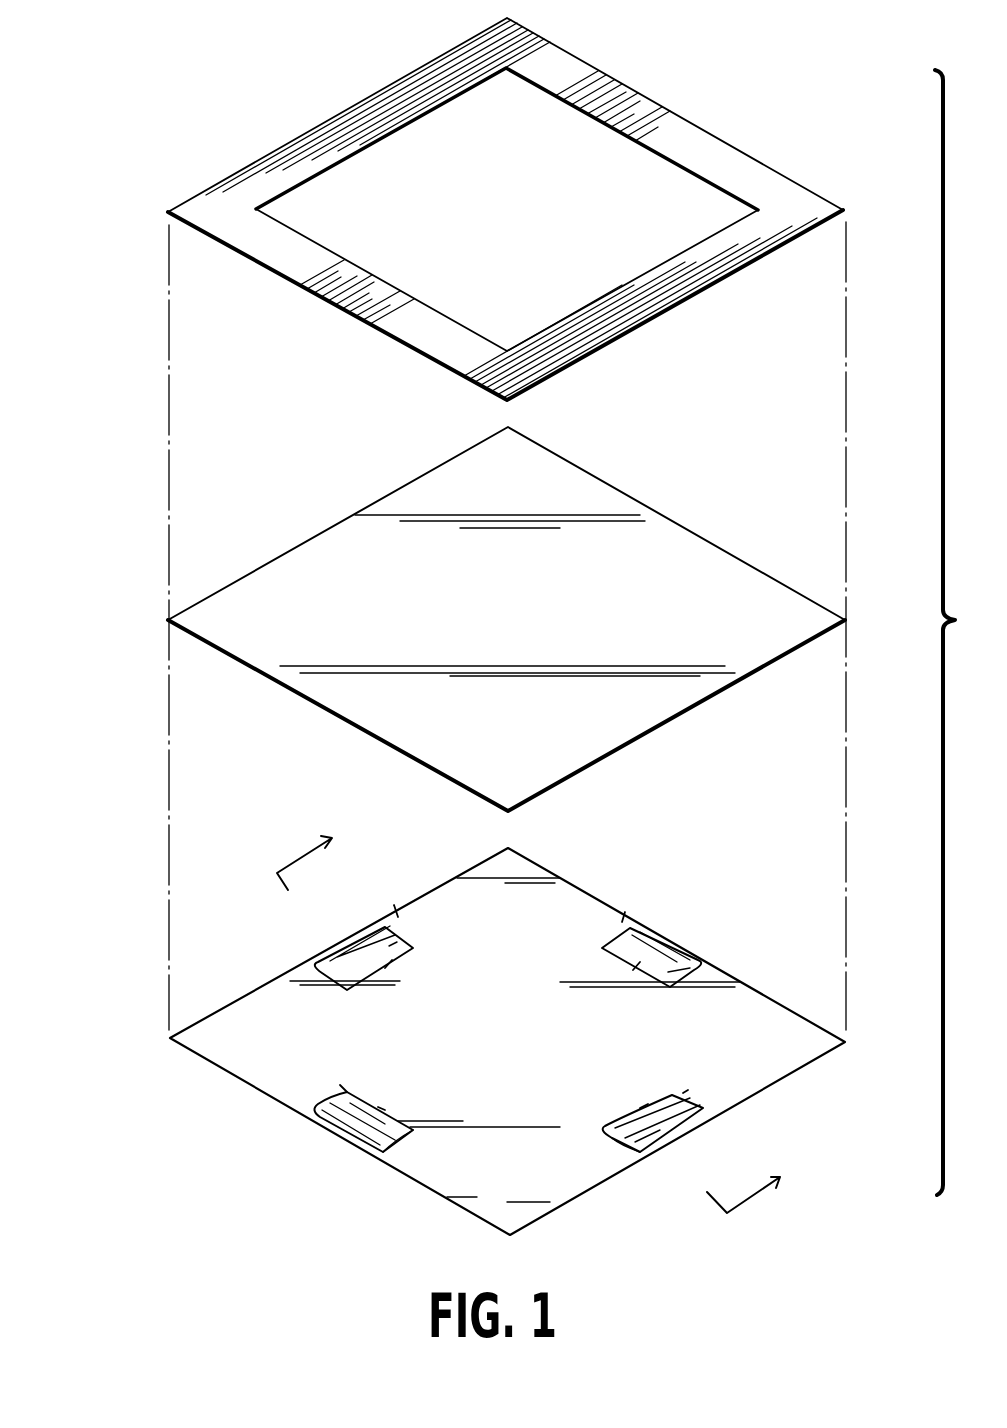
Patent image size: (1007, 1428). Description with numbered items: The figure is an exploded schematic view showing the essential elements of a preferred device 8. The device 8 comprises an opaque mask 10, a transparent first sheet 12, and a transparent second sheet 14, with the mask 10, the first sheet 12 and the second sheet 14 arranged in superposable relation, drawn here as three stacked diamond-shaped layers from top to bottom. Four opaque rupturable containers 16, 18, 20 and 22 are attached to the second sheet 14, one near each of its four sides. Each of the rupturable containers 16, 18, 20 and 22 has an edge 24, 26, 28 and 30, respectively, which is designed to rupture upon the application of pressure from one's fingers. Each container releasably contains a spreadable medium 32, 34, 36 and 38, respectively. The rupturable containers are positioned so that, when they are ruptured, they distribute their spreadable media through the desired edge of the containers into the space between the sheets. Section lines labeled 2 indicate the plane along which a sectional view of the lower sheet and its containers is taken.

The device 8 is at (88, 98).
The opaque mask 10 is at (372, 97).
The transparent first sheet 12 is at (312, 532).
The transparent second sheet 14 is at (250, 993).
The rupturable container 16 is at (355, 938).
The rupturable container 18 is at (663, 943).
The rupturable container 20 is at (673, 1133).
The rupturable container 22 is at (352, 1127).
The edge 24 is at (383, 968).
The edge 26 is at (633, 970).
The edge 28 is at (640, 1108).
The edge 30 is at (378, 1107).
The spreadable medium 32 is at (393, 905).
The spreadable medium 34 is at (625, 912).
The spreadable medium 36 is at (683, 1093).
The spreadable medium 38 is at (340, 1085).
The section line 2- 2 is at (540, 1014).